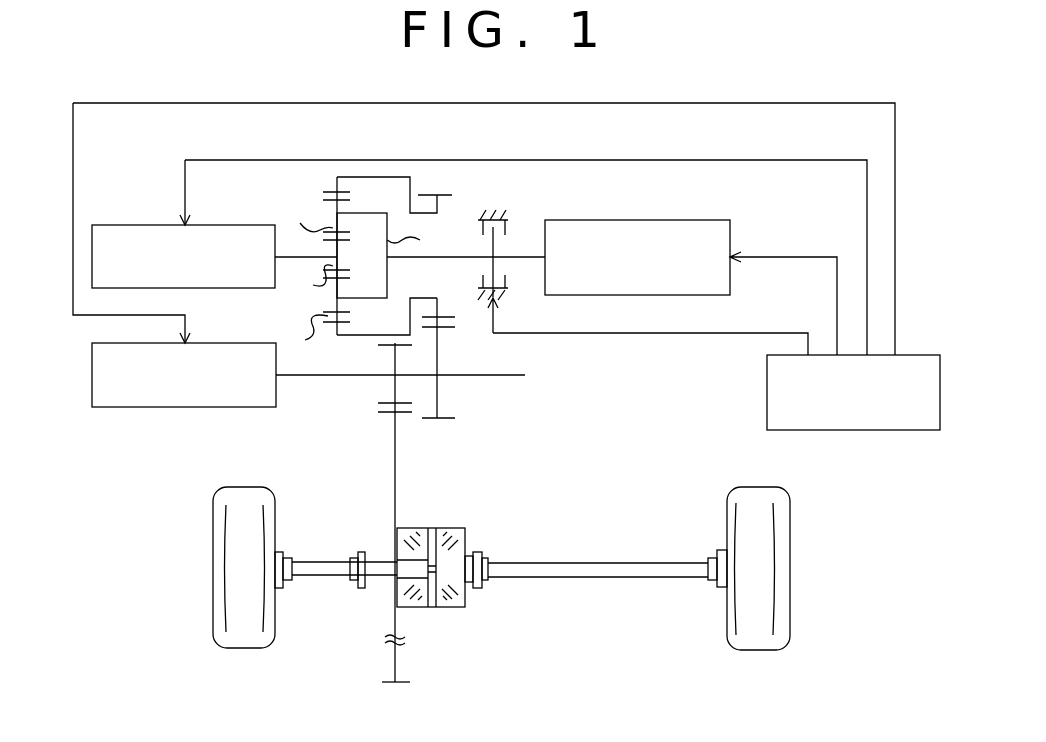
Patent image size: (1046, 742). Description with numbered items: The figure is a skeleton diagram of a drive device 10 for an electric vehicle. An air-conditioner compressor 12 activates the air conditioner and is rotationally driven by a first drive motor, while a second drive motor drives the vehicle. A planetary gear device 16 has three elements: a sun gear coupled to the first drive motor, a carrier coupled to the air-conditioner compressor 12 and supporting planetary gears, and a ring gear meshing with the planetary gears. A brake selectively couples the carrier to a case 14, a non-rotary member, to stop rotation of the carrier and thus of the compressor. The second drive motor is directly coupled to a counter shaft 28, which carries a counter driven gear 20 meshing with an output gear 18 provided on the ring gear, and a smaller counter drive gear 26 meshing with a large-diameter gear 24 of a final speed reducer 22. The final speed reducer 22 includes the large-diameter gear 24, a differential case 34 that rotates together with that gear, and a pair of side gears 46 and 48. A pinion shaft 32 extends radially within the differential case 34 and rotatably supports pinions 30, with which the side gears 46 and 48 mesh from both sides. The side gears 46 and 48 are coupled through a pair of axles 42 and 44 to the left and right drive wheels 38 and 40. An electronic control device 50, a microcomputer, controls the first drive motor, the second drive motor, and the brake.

The drive device 10 is at (148, 457).
The air-conditioner compressor 12 is at (722, 236).
The case 14 is at (488, 215).
The planetary gear device 16 is at (330, 180).
The output gear 18 is at (455, 318).
The counter driven gear 20 is at (440, 420).
The final speed reducer 22 is at (492, 600).
The large-diameter gear 24 is at (395, 456).
The counter drive gear 26 is at (385, 398).
The counter shaft 28 is at (458, 377).
The pinions 30 is at (448, 542).
The pinion shaft 32 is at (396, 643).
The differential case 34 is at (438, 607).
The left drive wheel 38 is at (222, 568).
The right drive wheel 40 is at (782, 560).
The axle 42 is at (325, 562).
The axle 44 is at (598, 565).
The side gear 46 is at (398, 590).
The side gear 48 is at (475, 552).
The electronic control device 50 is at (922, 355).